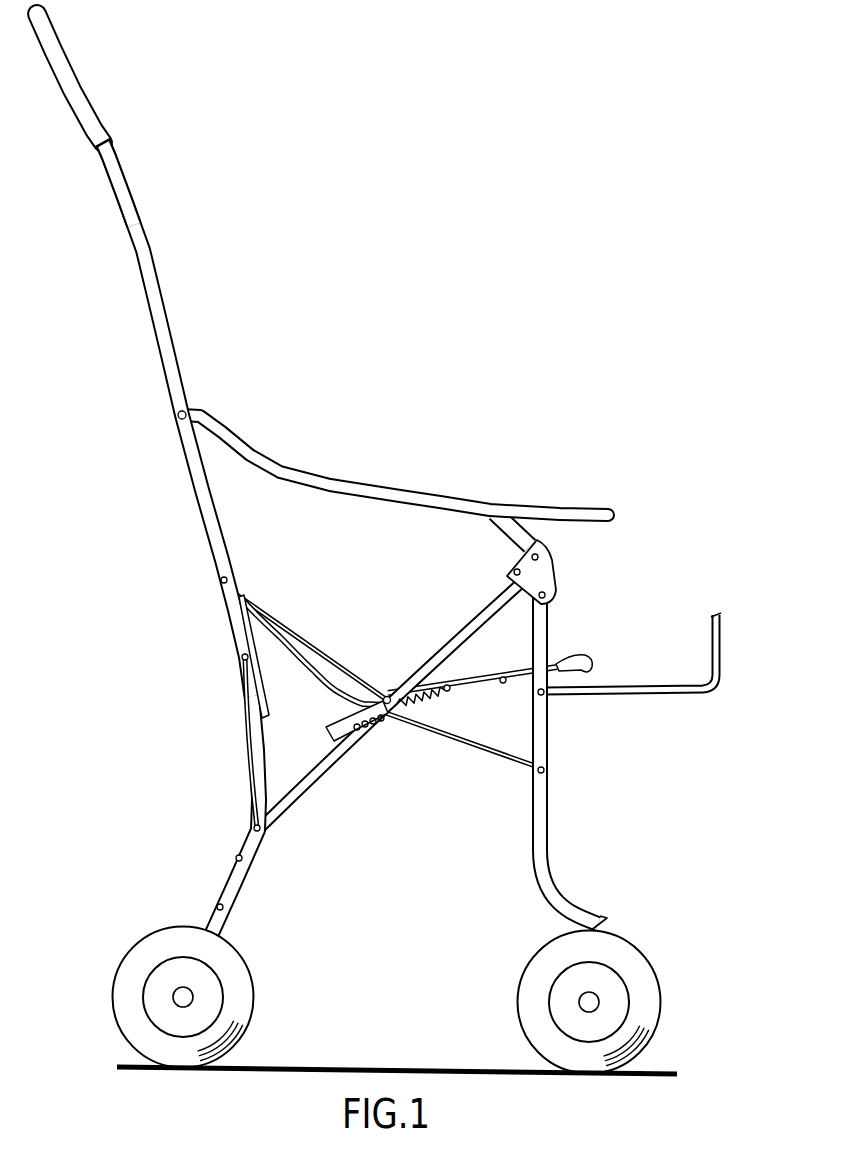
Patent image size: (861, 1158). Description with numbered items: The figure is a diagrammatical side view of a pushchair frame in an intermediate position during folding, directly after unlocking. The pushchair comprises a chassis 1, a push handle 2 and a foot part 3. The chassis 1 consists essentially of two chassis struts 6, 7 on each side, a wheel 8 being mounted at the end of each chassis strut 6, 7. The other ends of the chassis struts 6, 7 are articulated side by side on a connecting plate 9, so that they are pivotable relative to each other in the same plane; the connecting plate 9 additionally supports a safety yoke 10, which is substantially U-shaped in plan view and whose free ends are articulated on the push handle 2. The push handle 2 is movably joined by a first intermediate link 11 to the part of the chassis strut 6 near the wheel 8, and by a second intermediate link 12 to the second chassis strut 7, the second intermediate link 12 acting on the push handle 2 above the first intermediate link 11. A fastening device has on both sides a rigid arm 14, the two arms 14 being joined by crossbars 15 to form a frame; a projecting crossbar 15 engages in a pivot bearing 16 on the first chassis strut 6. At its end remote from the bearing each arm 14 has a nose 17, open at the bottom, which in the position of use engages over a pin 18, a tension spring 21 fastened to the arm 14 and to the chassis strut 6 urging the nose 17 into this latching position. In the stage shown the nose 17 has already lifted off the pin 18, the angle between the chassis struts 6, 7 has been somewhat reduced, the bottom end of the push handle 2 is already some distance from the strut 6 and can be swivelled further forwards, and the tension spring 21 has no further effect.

The chassis 1 is at (383, 544).
The push handle 2 is at (163, 333).
The foot part 3 is at (630, 687).
The chassis strut 6 is at (228, 877).
The chassis strut 7 is at (557, 893).
The wheel 8 is at (235, 998).
The connecting plate 9 is at (548, 568).
The safety yoke 10 is at (355, 486).
The first intermediate link 11 is at (247, 743).
The second intermediate link 12 is at (262, 630).
The arm 14 is at (470, 687).
The crossbar 15 is at (501, 686).
The pivot bearing 16 is at (387, 697).
The nose 17 is at (587, 658).
The pin 18 is at (550, 698).
The tension spring 21 is at (397, 710).